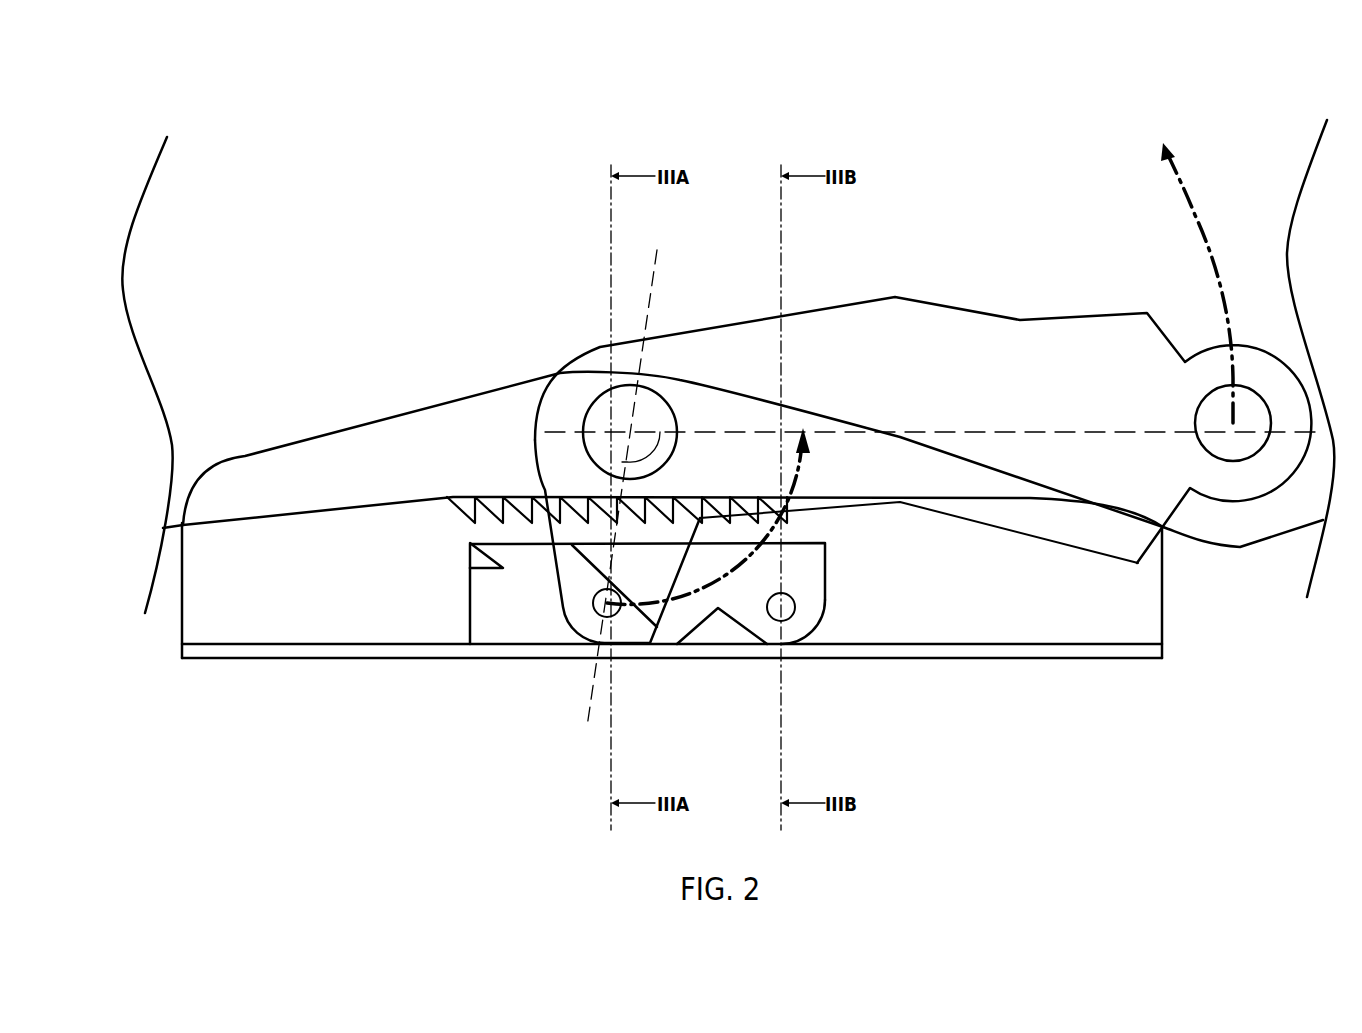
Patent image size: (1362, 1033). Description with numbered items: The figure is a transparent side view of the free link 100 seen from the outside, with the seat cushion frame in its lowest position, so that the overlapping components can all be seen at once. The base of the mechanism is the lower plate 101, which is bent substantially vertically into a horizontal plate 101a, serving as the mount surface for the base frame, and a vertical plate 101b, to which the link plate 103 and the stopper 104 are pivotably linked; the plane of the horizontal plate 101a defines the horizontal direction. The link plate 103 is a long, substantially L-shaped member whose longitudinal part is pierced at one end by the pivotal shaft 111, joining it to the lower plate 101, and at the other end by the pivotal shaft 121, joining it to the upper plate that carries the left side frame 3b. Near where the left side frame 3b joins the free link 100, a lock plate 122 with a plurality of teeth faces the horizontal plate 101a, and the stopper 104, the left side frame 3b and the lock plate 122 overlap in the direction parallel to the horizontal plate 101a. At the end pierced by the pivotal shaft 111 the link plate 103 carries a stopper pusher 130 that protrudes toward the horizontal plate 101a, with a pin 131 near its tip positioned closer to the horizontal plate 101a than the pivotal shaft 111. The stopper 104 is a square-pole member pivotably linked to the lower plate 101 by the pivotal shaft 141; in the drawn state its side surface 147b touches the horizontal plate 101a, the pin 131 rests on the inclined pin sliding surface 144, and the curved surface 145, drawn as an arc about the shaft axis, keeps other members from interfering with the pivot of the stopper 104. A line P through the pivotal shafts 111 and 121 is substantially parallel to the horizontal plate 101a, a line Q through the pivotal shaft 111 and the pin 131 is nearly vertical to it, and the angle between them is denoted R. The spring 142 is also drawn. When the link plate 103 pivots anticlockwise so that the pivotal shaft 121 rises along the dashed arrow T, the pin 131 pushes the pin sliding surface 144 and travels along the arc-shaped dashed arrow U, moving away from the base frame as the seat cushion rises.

The free link 100 is at (1342, 94).
The lower plate 101 is at (1163, 648).
The horizontal plate 101a is at (320, 644).
The vertical plate 101b is at (270, 573).
The link plate 103 is at (908, 297).
The stopper 104 is at (813, 578).
The pivotal shaft 111 is at (600, 423).
The pivotal shaft 121 is at (1225, 410).
The lock plate 122 is at (487, 567).
The stopper pusher 130 is at (560, 558).
The pin 131 is at (597, 612).
The pivotal shaft 141 is at (770, 608).
The spring 142 is at (473, 505).
The pin sliding surface 144 is at (637, 610).
The curved surface 145 is at (817, 645).
The side surface 147b is at (490, 648).
The left side frame 3b is at (1225, 545).
The line P is at (1043, 425).
The line Q is at (597, 680).
The angle R is at (650, 455).
The arrow T is at (1172, 168).
The arrow U is at (795, 462).